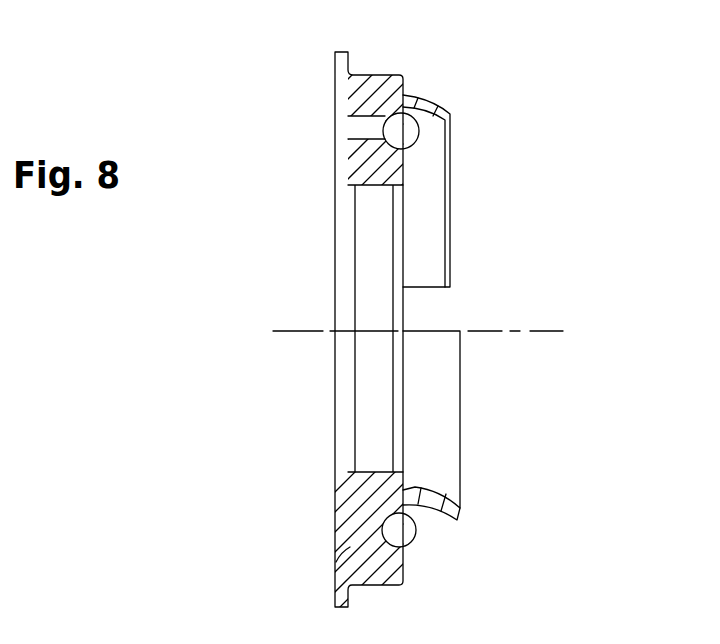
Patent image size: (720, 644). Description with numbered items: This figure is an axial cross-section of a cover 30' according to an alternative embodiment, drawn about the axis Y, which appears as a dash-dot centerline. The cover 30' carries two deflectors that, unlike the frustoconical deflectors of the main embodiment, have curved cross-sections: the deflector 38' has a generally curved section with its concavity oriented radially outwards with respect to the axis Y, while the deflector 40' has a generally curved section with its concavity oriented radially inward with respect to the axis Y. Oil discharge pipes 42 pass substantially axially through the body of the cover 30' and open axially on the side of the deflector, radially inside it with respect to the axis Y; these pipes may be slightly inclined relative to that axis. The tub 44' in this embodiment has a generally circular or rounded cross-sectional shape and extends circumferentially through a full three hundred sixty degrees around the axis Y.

The cover 30' is at (304, 322).
The oil discharge pipe 42 is at (358, 134).
The tub 44' is at (443, 355).
The deflector 40' is at (482, 174).
The deflector 38' is at (480, 449).
The axis Y is at (538, 331).